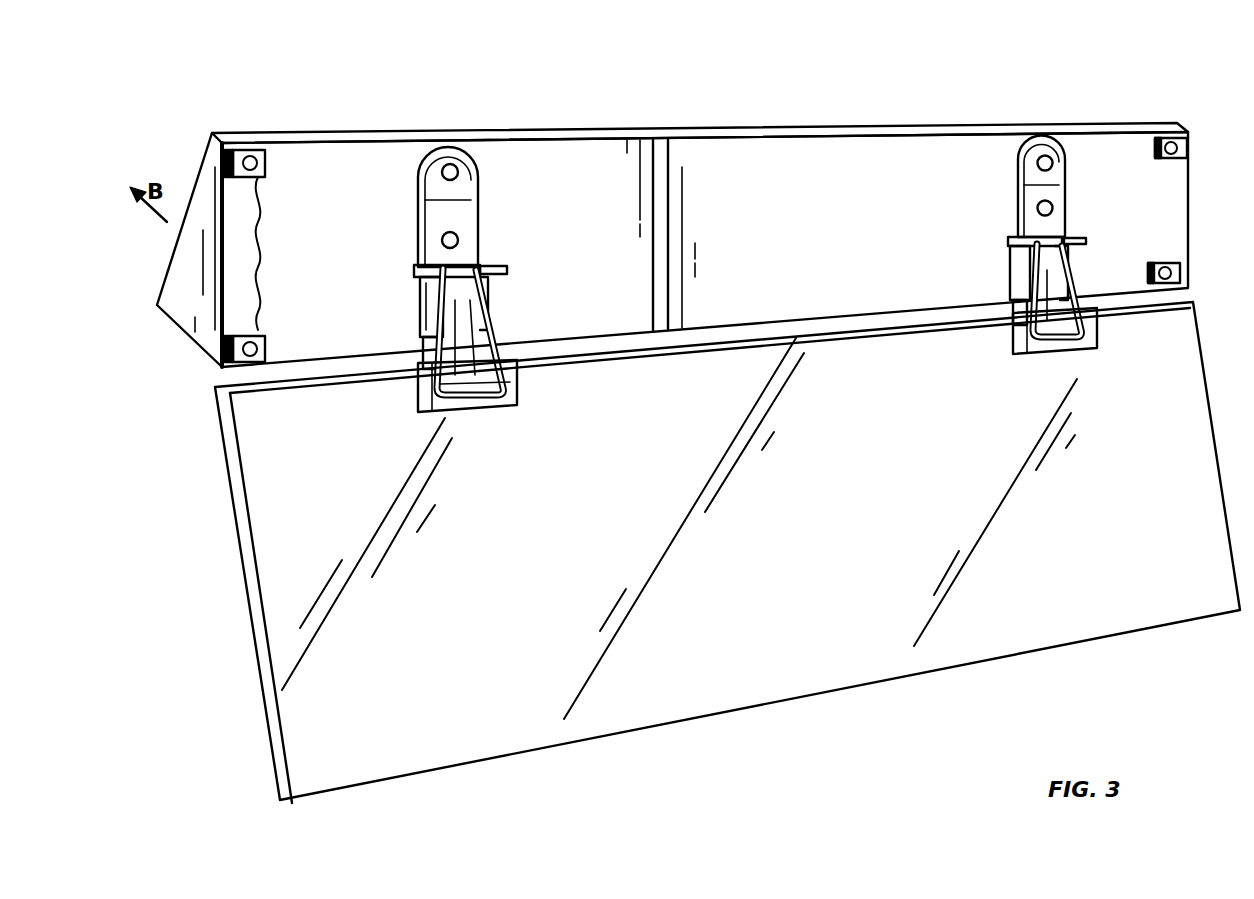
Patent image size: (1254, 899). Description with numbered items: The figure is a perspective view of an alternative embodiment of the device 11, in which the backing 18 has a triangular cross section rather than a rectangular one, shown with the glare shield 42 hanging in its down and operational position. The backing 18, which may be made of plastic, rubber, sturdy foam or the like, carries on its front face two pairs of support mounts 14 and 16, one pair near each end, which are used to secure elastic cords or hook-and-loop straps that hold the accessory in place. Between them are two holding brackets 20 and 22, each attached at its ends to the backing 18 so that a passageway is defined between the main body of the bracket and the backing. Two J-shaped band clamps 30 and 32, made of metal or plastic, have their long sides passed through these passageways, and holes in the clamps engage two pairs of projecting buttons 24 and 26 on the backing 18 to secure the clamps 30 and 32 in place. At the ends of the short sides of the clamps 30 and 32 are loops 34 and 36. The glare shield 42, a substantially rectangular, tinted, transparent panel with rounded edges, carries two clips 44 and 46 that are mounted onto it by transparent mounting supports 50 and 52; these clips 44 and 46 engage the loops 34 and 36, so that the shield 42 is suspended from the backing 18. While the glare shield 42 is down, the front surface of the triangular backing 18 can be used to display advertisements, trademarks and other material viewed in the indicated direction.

The device 11 is at (1081, 77).
The support mount 14 is at (259, 250).
The support mount 16 is at (1192, 282).
The backing 18 is at (750, 127).
The holding bracket 20 is at (425, 325).
The holding bracket 22 is at (1012, 282).
The projecting buttons 24 is at (460, 176).
The projecting buttons 26 is at (1035, 168).
The J-shaped band clamp 30 is at (418, 215).
The J-shaped band clamp 32 is at (1067, 165).
The loop 34 is at (513, 268).
The loop 36 is at (1083, 240).
The glare shield 42 is at (800, 702).
The clip 44 is at (490, 337).
The clip 46 is at (1075, 280).
The transparent mounting support 50 is at (522, 398).
The transparent mounting support 52 is at (1033, 353).